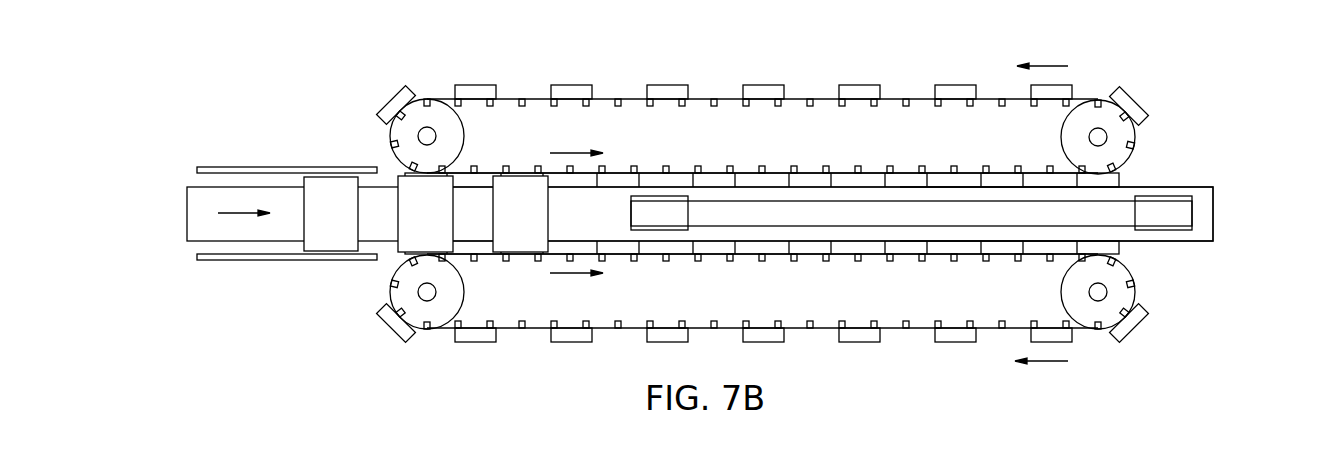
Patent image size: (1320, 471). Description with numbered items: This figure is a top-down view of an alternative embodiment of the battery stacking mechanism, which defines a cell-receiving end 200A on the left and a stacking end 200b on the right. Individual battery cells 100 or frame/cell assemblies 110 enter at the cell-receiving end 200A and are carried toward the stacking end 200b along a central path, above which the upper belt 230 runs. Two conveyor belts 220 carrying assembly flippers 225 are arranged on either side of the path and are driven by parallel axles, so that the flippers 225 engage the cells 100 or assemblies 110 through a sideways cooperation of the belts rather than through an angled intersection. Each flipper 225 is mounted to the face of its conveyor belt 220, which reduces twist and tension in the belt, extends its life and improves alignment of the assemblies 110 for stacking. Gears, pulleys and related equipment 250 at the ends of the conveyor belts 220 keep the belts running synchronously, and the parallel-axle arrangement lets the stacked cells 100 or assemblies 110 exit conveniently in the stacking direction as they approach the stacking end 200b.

The battery cell 100 is at (315, 242).
The frame/cell assembly 110 is at (330, 243).
The cell-receiving end 200A is at (162, 221).
The stacking end 200b is at (1285, 221).
The conveyor belt 220 is at (893, 97).
The assembly flipper 225 is at (858, 90).
The upper belt 230 is at (1172, 217).
The gears, pulleys and related equipment 250 is at (1135, 135).